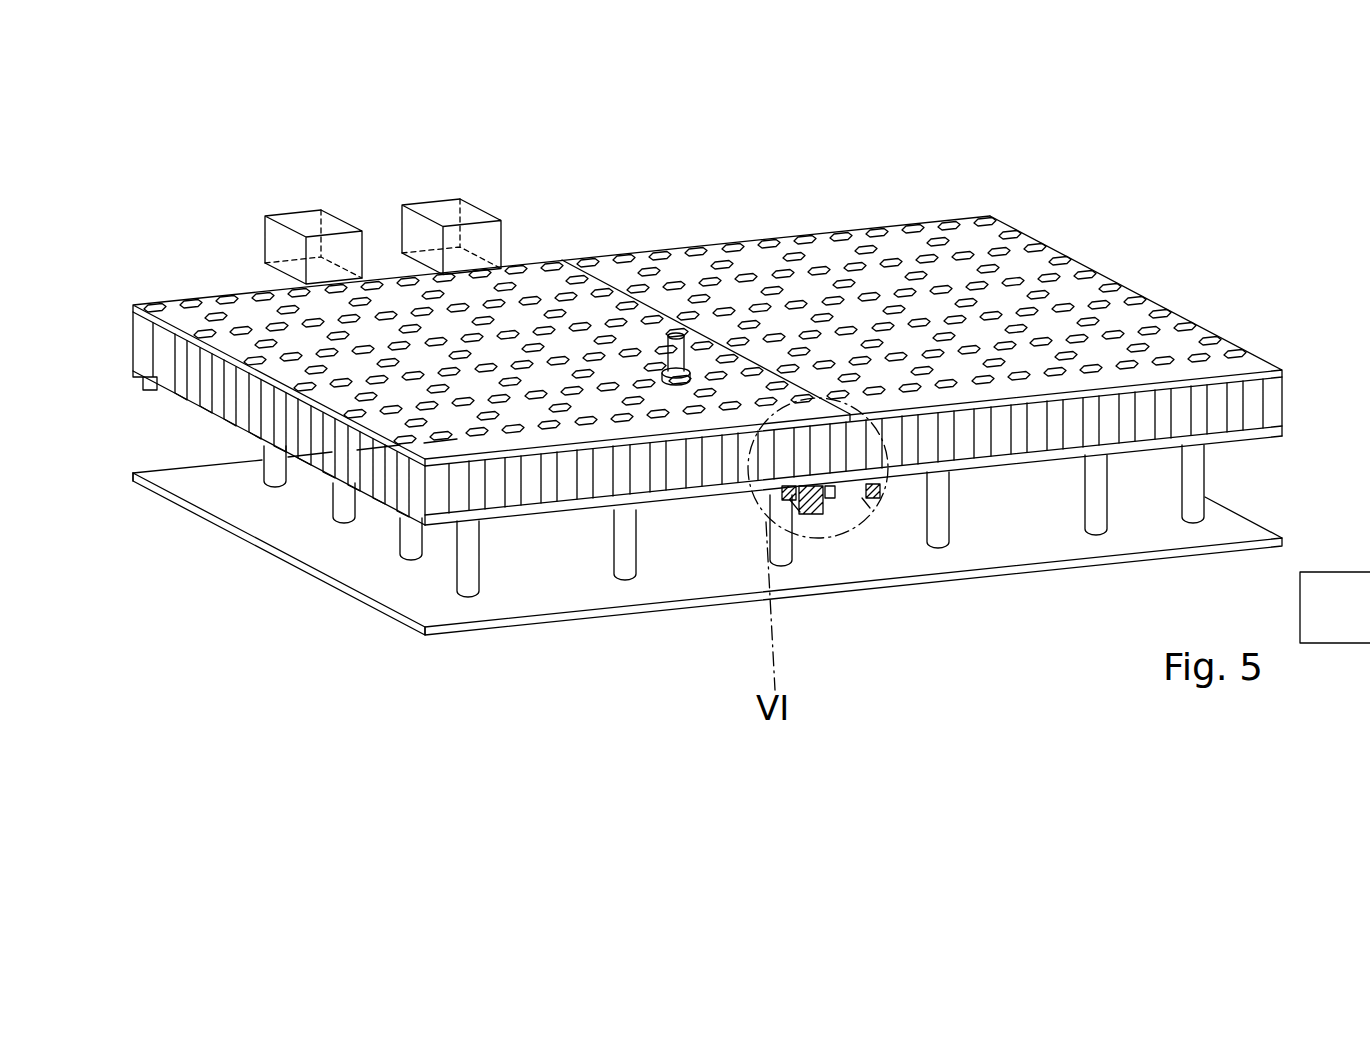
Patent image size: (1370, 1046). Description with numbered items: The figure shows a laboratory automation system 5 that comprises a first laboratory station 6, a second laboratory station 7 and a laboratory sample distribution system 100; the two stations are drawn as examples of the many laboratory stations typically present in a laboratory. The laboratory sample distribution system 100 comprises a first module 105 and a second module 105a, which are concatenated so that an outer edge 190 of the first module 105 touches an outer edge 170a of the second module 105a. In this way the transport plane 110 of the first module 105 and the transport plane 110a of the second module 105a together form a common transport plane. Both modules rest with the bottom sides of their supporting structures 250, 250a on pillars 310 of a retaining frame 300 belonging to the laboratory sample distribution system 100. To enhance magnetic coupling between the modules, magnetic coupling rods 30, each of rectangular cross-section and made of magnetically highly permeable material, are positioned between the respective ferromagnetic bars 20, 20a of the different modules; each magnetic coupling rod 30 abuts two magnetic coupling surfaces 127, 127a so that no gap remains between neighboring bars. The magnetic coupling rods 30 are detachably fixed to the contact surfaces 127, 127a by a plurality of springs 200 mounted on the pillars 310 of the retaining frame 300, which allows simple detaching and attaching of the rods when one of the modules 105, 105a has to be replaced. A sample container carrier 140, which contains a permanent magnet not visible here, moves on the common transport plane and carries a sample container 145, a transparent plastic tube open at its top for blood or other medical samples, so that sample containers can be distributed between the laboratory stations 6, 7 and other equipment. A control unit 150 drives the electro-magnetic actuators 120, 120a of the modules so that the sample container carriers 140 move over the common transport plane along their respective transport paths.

The laboratory automation system 5 is at (190, 531).
The first laboratory station 6 is at (305, 222).
The second laboratory station 7 is at (442, 212).
The ferromagnetic bar 20 is at (801, 492).
The ferromagnetic bar 20a is at (867, 478).
The magnetic coupling rod 30 is at (815, 488).
The laboratory sample distribution system 100 is at (137, 508).
The first module 105 is at (508, 588).
The second module 105a is at (1238, 458).
The transport plane 110 is at (212, 300).
The transport plane 110a is at (648, 258).
The electro-magnetic actuator 120 is at (615, 490).
The electro-magnetic actuator 120a is at (988, 430).
The magnetic coupling surface 127 is at (795, 485).
The magnetic coupling surface 127a is at (868, 486).
The sample container carrier 140 is at (661, 382).
The sample container 145 is at (692, 384).
The control unit 150 is at (1362, 616).
The outer edge 170a is at (690, 346).
The outer edge 190 is at (612, 286).
The spring 200 is at (828, 483).
The supporting structure 250 is at (374, 500).
The supporting structure 250a is at (1182, 468).
The retaining frame 300 is at (437, 636).
The pillar 310 is at (474, 598).